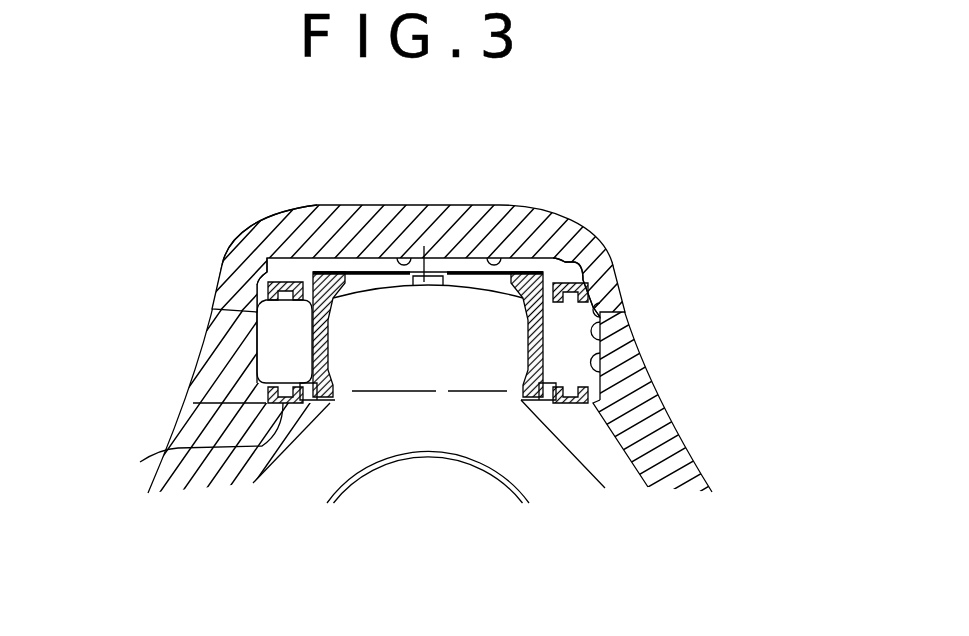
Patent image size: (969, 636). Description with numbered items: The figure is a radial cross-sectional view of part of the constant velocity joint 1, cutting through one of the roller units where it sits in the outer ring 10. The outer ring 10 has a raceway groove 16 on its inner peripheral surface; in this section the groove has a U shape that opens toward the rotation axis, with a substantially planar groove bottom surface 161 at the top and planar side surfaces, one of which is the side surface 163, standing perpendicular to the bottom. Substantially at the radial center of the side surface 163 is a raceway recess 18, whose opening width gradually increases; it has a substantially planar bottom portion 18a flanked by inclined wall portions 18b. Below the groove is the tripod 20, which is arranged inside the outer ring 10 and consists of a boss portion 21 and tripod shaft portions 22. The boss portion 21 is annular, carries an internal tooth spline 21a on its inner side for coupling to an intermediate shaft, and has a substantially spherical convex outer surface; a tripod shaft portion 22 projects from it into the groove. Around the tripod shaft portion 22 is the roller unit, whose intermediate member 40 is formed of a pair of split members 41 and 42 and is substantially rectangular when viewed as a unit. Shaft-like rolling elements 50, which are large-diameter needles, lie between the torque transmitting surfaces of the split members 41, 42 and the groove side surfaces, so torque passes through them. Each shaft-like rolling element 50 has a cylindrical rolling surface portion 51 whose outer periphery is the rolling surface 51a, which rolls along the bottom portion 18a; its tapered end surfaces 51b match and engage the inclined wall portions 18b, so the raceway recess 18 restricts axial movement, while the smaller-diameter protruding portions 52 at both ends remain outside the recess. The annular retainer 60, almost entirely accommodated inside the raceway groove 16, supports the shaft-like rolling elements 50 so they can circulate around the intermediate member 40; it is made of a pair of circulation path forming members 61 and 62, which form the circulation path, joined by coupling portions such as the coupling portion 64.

The constant velocity joint 1 is at (636, 185).
The outer ring 10 is at (660, 443).
The raceway groove 16 is at (507, 255).
The raceway recess 18 is at (736, 255).
The bottom portion 18a is at (600, 325).
The inclined wall portions 18b is at (603, 285).
The tripod 20 is at (335, 563).
The boss portion 21 is at (303, 462).
The internal tooth spline 21a is at (490, 473).
The tripod shaft portion 22 is at (410, 427).
The intermediate member 40 is at (370, 262).
The split member 41 is at (527, 277).
The split member 42 is at (302, 277).
The shaft-like rolling element 50 is at (268, 300).
The rolling surface portion 51 is at (125, 292).
The rolling surface 51a is at (256, 342).
The tapered end surfaces 51b is at (256, 314).
The protruding portion 52 is at (272, 287).
The retainer 60 is at (227, 277).
The circulation path forming member 61 is at (266, 280).
The circulation path forming member 62 is at (258, 396).
The coupling portion 64 is at (433, 264).
The groove bottom surface 161 is at (424, 246).
The side surface 163 is at (603, 250).